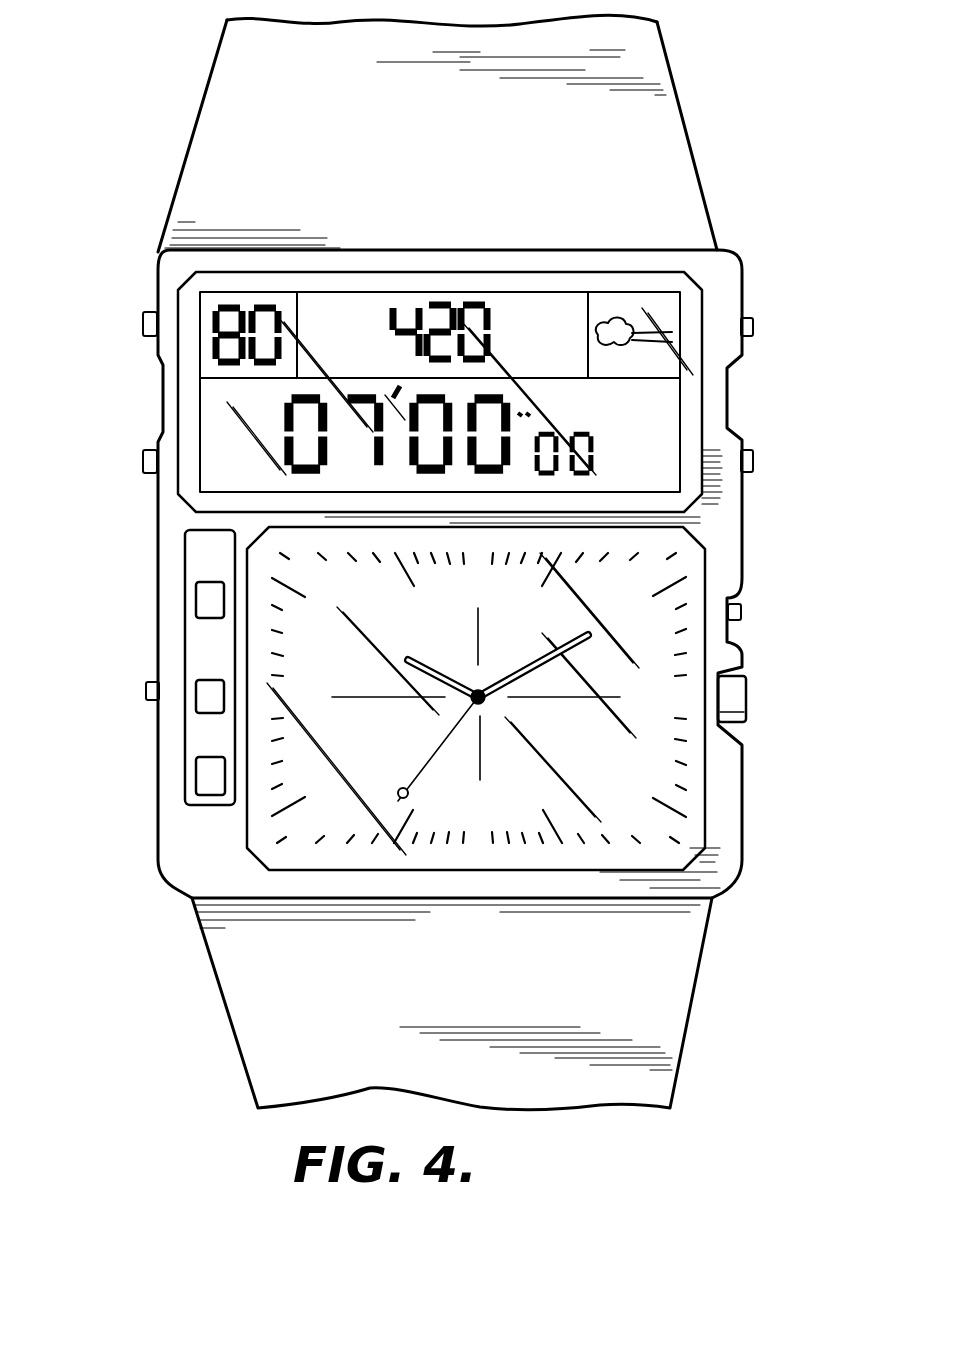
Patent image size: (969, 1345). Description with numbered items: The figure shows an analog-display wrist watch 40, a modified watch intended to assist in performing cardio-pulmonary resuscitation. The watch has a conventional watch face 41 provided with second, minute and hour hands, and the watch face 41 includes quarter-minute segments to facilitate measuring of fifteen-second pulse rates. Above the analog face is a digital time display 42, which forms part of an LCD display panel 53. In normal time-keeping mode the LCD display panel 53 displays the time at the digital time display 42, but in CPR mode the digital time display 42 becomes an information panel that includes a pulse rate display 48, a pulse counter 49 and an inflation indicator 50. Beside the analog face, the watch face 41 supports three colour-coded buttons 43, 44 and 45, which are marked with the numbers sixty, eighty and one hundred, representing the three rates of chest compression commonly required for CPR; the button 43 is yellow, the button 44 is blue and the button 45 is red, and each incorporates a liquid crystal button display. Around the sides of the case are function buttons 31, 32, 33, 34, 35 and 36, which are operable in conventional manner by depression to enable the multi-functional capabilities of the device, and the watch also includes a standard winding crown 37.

The function button 31 is at (143, 318).
The function button 32 is at (143, 455).
The function button 33 is at (148, 688).
The function button 34 is at (753, 322).
The function button 35 is at (753, 456).
The function button 36 is at (742, 612).
The winding crown 37 is at (747, 690).
The analog-display wrist watch 40 is at (738, 213).
The watch face 41 is at (615, 752).
The digital time display 42 is at (658, 425).
The button 43 is at (195, 600).
The button 44 is at (195, 700).
The button 45 is at (195, 775).
The pulse rate display 48 is at (272, 293).
The pulse counter 49 is at (438, 296).
The inflation indicator 50 is at (620, 300).
The LCD display panel 53 is at (715, 470).